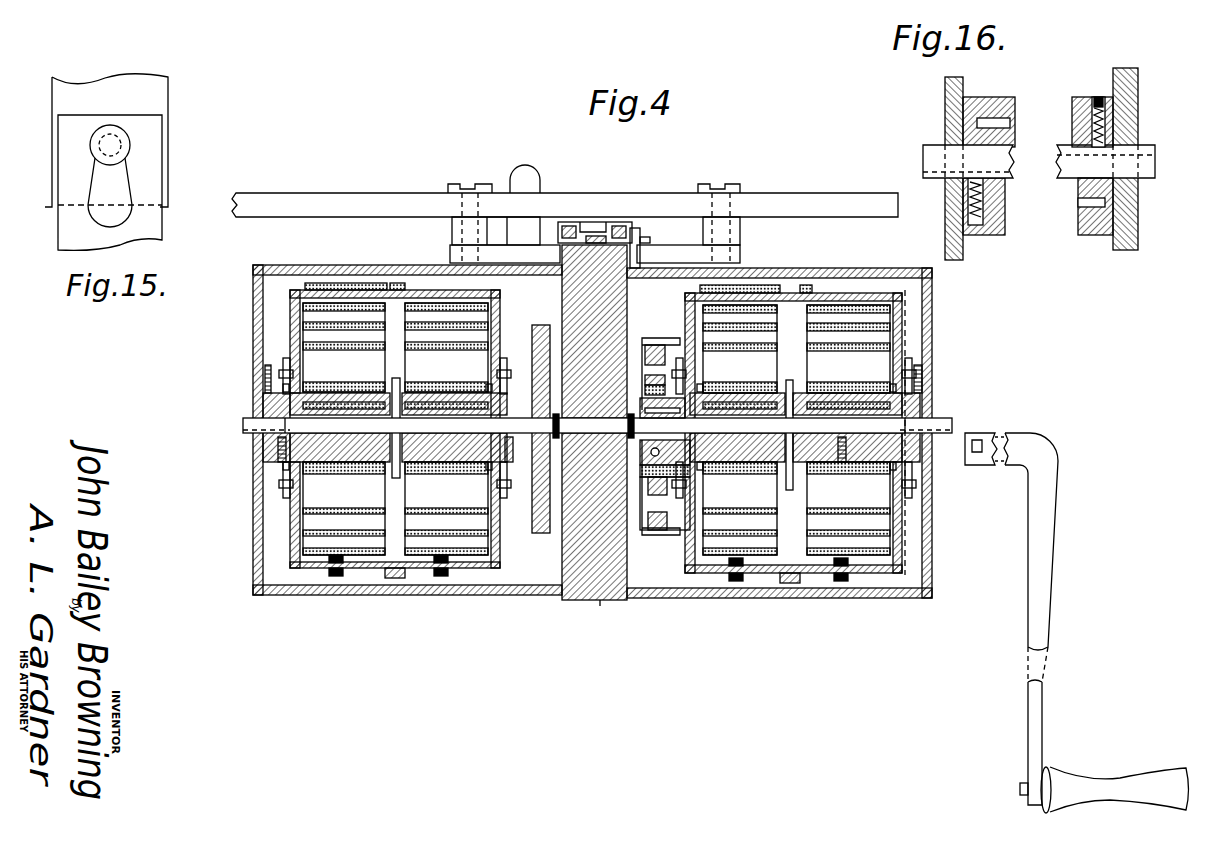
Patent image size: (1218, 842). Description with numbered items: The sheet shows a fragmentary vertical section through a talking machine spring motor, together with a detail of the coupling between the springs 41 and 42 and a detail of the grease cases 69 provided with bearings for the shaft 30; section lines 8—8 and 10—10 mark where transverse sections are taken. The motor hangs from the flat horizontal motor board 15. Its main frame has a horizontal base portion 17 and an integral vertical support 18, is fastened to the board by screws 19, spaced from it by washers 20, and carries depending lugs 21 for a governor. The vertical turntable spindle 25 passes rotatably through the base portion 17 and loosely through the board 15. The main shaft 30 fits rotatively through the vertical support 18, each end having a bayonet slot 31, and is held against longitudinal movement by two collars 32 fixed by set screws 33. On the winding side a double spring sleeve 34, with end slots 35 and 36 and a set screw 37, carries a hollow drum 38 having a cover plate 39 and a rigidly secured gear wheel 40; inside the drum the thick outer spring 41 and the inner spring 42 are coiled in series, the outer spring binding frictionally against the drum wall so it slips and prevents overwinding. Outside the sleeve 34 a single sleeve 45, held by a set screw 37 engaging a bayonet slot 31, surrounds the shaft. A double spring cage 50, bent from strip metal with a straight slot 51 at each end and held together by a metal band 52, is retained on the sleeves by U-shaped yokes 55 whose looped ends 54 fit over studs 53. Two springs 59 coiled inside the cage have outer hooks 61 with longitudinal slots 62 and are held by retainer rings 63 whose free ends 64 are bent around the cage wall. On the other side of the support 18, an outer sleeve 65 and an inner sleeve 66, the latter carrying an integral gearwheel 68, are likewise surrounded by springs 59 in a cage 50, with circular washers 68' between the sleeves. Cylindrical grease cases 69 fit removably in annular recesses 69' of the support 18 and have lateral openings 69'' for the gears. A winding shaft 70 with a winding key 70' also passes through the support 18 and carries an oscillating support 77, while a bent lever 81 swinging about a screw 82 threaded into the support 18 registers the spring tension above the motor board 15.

In FIG. 4, the section line 8— 8 is at (905, 287).
In FIG. 4, the section line 10— 10 is at (935, 289).
In FIG. 4, the motor board 15 is at (371, 205).
In FIG. 4, the horizontal plate or base portion 17 is at (740, 250).
In FIG. 4, the vertical support 18 is at (590, 600).
In FIG. 4, the screws 19 is at (462, 184).
In FIG. 4, the washers 20 is at (452, 236).
In FIG. 4, the lugs 21 is at (450, 254).
In FIG. 4, the turntable spindle 25 is at (525, 176).
In FIG. 4, the main shaft 30 is at (243, 421).
In FIG. 16, the main shaft 30 is at (925, 145).
In FIG. 4, the bayonet slot 31 is at (250, 440).
In FIG. 16, the bayonet slot 31 is at (923, 174).
In FIG. 4, the collars 32 is at (562, 457).
In FIG. 4, the set screws 33 is at (609, 427).
In FIG. 4, the double spring sleeve 34 is at (755, 405).
In FIG. 4, the slot 35 is at (614, 430).
In FIG. 4, the slot 36 is at (752, 462).
In FIG. 16, the slot 36 is at (1078, 202).
In FIG. 4, the set screw 37 is at (263, 455).
In FIG. 16, the set screw 37 is at (1097, 97).
In FIG. 4, the hollow drum 38 is at (655, 345).
In FIG. 4, the cover plate 39 is at (612, 600).
In FIG. 4, the gear wheel 40 is at (668, 338).
In FIG. 4, the outer spring 41 is at (650, 345).
In FIG. 15, the outer spring 41 is at (132, 77).
In FIG. 4, the inner spring 42 is at (675, 475).
In FIG. 15, the inner spring 42 is at (162, 115).
In FIG. 4, the single sleeve 45 is at (822, 405).
In FIG. 16, the single sleeve 45 is at (1072, 127).
In FIG. 4, the double spring cage 50 is at (866, 264).
In FIG. 4, the straight slot 51 is at (283, 388).
In FIG. 4, the metal band 52 is at (396, 283).
In FIG. 4, the studs 53 is at (283, 372).
In FIG. 4, the looped ends 54 is at (286, 358).
In FIG. 4, the U-shaped spring steel yoke 55 is at (265, 385).
In FIG. 4, the springs 59 is at (330, 535).
In FIG. 4, the hook 61 is at (330, 283).
In FIG. 4, the longitudinally extending slot 62 is at (350, 283).
In FIG. 4, the spring retainer ring 63 is at (346, 300).
In FIG. 4, the free ends 64 is at (336, 576).
In FIG. 4, the outer sleeve 65 is at (355, 462).
In FIG. 16, the outer sleeve 65 is at (1010, 100).
In FIG. 4, the inner sleeve 66 is at (440, 462).
In FIG. 4, the gearwheel 68 is at (474, 410).
In FIG. 4, the circular washers 68' is at (595, 446).
In FIG. 4, the grease cases 69 is at (592, 458).
In FIG. 16, the grease cases 69 is at (1036, 168).
In FIG. 4, the annular recess 69' is at (590, 622).
In FIG. 4, the lateral openings 69'' is at (513, 599).
In FIG. 4, the winding shaft 70 is at (995, 433).
In FIG. 4, the winding key 70' is at (1096, 623).
In FIG. 4, the support 77 is at (636, 228).
In FIG. 4, the bent lever 81 is at (650, 240).
In FIG. 4, the screw 82 is at (588, 222).